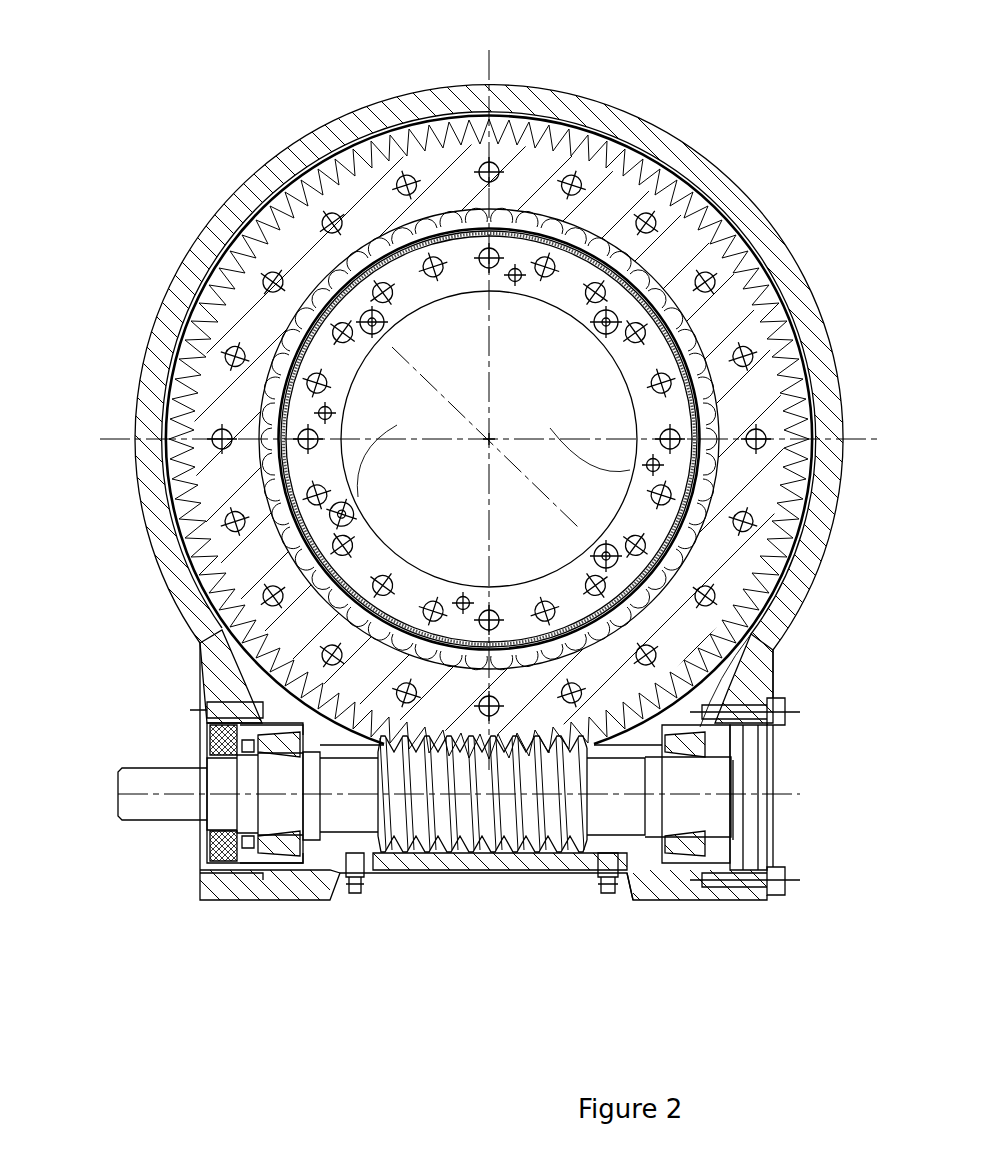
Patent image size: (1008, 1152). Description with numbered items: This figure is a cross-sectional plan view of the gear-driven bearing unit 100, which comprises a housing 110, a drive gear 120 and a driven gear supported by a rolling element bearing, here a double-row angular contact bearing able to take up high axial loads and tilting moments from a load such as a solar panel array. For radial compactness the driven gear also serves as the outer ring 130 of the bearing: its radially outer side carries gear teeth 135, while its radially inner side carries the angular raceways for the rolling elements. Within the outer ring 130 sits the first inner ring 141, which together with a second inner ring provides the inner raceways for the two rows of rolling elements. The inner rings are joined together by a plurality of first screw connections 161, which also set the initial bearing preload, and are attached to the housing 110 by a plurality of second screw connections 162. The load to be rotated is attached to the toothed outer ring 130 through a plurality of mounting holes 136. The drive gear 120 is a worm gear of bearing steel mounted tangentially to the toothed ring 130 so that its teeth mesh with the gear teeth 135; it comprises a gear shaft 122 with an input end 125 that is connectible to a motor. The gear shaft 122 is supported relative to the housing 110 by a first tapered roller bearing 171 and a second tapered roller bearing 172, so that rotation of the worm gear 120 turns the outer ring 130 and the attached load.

The unit 100 is at (205, 72).
The housing 110 is at (661, 138).
The drive gear 120 is at (432, 862).
The gear shaft 122 is at (625, 810).
The input end 125 is at (133, 800).
The outer ring 130 is at (250, 567).
The gear teeth 135 is at (782, 262).
The mounting holes 136 is at (783, 595).
The first inner ring 141 is at (170, 470).
The first screw connections 161 is at (517, 285).
The second screw connections 162 is at (373, 325).
The first tapered roller bearing 171 is at (283, 845).
The second tapered roller bearing 172 is at (740, 872).